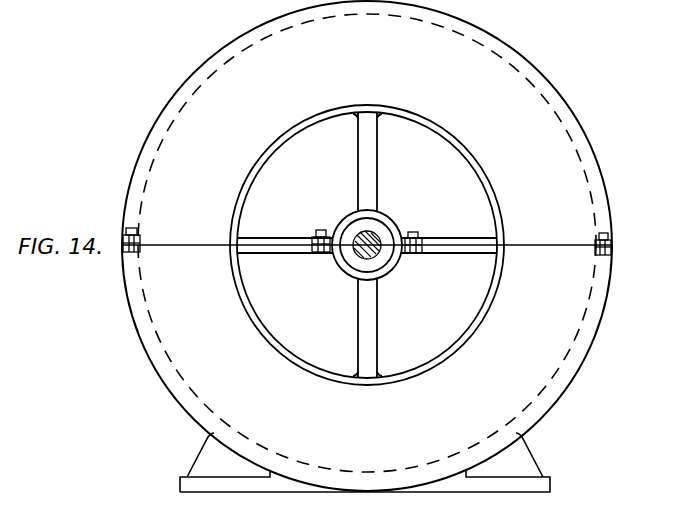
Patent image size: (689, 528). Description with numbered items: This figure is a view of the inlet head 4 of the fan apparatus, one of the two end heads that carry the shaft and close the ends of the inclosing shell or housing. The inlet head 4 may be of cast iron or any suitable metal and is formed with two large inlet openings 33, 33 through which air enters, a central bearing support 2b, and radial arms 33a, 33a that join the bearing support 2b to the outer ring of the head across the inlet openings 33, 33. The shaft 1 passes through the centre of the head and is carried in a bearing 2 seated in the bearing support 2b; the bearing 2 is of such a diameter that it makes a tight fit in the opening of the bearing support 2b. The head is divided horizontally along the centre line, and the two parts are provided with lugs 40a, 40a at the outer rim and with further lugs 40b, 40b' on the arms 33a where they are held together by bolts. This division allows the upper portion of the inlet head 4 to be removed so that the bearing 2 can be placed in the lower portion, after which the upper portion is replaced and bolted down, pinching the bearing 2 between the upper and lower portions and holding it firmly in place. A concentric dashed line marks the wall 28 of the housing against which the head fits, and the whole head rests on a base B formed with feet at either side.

The shaft 1 is at (374, 252).
The bearing 2 is at (380, 225).
The bearing support 2b is at (342, 268).
The inlet head 4 is at (367, 246).
The drum wall 28 is at (580, 331).
The inlet opening 33 is at (367, 245).
The arm 33a is at (377, 161).
The lug 40a is at (628, 228).
The clamp on spider arm 40b is at (303, 257).
The clamp on spider arm 40b' is at (441, 234).
The base B is at (238, 492).